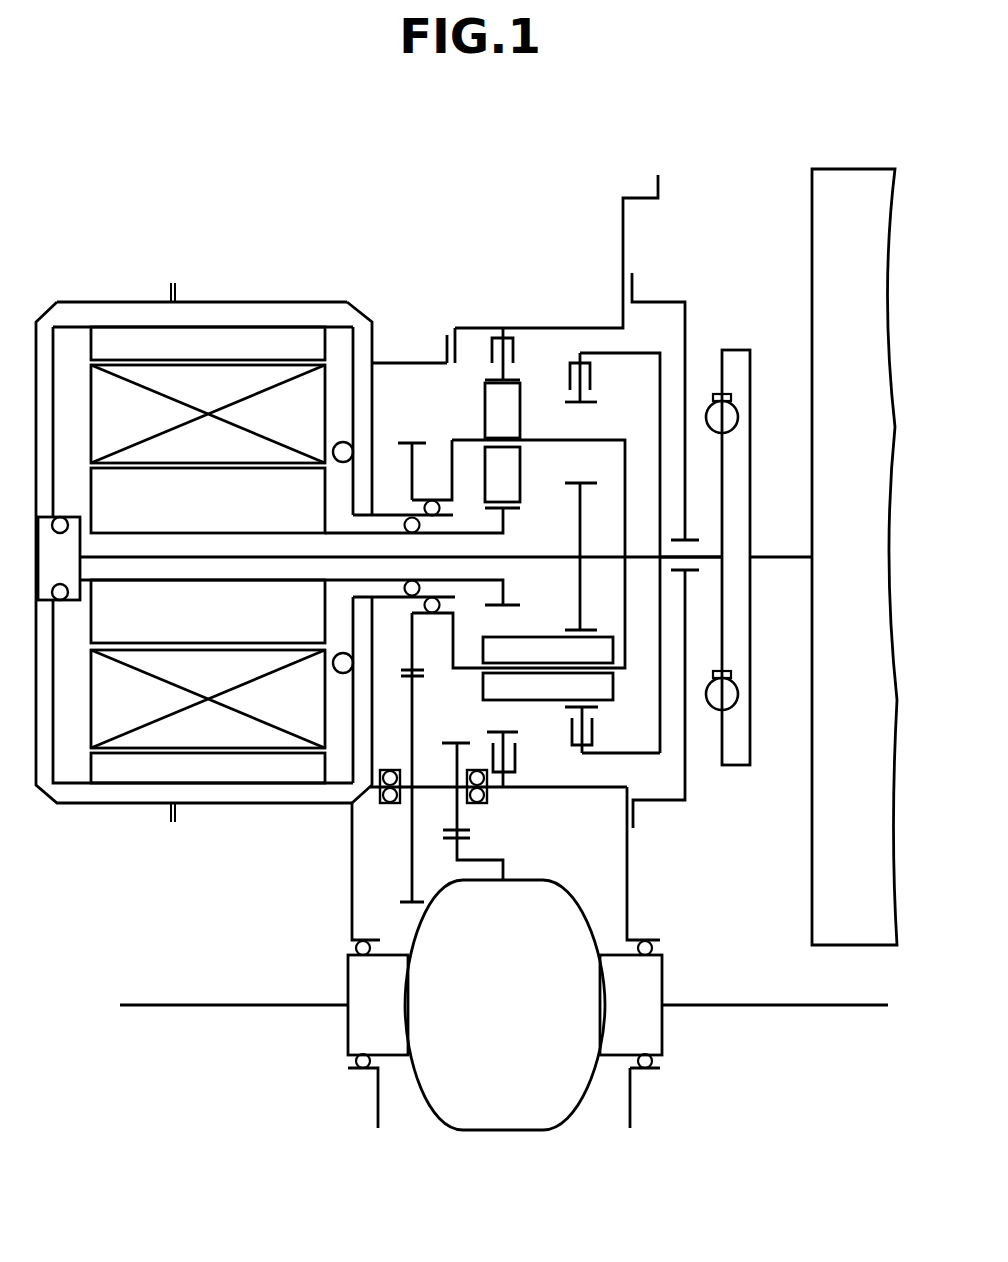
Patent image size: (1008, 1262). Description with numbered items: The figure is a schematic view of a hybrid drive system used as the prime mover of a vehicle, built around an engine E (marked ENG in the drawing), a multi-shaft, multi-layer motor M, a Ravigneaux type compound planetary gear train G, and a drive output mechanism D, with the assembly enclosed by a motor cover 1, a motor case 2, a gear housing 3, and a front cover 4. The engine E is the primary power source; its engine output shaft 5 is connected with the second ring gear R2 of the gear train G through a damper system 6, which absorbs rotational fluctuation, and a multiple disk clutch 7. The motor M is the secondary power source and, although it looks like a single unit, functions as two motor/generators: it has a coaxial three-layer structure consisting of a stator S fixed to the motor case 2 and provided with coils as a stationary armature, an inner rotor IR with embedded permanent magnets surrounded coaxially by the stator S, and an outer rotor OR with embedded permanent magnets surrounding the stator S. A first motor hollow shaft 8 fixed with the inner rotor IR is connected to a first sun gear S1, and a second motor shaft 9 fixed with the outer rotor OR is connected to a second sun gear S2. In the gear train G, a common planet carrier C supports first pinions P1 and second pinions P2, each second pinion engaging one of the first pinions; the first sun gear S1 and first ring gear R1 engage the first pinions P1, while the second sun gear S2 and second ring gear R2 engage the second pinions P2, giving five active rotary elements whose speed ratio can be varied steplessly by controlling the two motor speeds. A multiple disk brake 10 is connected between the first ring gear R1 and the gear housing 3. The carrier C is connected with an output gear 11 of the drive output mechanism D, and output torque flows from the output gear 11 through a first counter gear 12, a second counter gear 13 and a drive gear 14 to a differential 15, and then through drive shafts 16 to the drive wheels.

The motor cover 1 is at (107, 301).
The motor case 2 is at (306, 301).
The gear housing 3 is at (575, 328).
The front cover 4 is at (688, 325).
The engine output shaft 5 is at (778, 556).
The damper system 6 is at (714, 395).
The multiple disk clutch 7 is at (592, 380).
The first motor hollow shaft 8 is at (470, 538).
The second motor shaft 9 is at (549, 557).
The multiple disk brake 10 is at (490, 345).
The output gear 11 is at (408, 441).
The first counter gear 12 is at (418, 688).
The second counter gear 13 is at (453, 743).
The drive gear 14 is at (471, 838).
The differential 15 is at (487, 1024).
The drive shafts 16 is at (225, 1004).
The multi-shaft, multi-layer motor M is at (238, 300).
The Ravigneaux type compound planetary gear train G is at (545, 347).
The engine E is at (805, 248).
The engine ENG is at (850, 563).
The drive output mechanism D is at (383, 869).
The common planet carrier C is at (626, 632).
The outer rotor OR is at (190, 357).
The inner rotor IR is at (192, 517).
The stator S is at (114, 426).
The first ring gear R1 is at (490, 388).
The second ring gear R2 is at (585, 404).
The first pinions P1 is at (521, 408).
The second pinions P2 is at (527, 701).
The first sun gear S1 is at (520, 605).
The second sun gear S2 is at (579, 483).